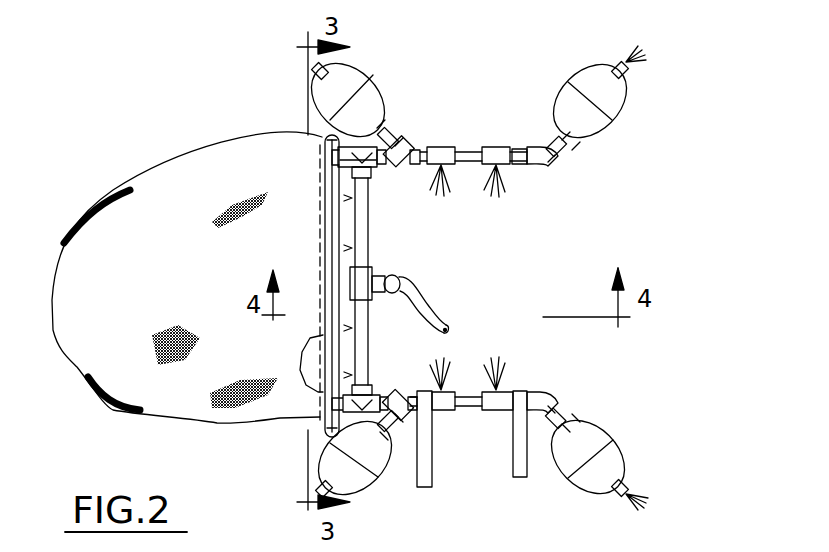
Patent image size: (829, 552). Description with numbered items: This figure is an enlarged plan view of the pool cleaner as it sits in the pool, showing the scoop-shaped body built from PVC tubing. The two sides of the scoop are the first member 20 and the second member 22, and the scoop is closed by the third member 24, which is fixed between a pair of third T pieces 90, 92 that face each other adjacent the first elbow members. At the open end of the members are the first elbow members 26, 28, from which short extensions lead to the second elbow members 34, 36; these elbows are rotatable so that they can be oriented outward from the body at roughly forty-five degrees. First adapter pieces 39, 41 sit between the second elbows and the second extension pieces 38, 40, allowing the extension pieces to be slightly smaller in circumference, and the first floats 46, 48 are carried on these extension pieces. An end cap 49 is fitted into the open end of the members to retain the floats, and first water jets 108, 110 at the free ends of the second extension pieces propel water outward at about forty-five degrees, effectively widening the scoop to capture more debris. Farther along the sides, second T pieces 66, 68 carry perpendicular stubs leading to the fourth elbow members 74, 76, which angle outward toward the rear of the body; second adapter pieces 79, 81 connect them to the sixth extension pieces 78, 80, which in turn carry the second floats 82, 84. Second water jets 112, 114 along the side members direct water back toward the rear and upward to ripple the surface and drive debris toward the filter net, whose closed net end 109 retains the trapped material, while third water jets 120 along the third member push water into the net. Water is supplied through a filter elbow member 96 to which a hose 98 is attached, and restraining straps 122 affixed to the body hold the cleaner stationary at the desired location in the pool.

The first member 20 is at (467, 147).
The second member 22 is at (473, 411).
The third member 24 is at (369, 232).
The first elbow member 26 is at (548, 165).
The first elbow member 28 is at (541, 393).
The second elbow member 34 is at (532, 148).
The second elbow member 36 is at (528, 392).
The second extension piece 38 is at (598, 128).
The first adapter piece 39 is at (562, 152).
The second extension piece 40 is at (568, 410).
The first adapter piece 41 is at (560, 410).
The first float 46 is at (616, 106).
The first float 48 is at (613, 440).
The end cap 49 is at (620, 63).
The second T piece 66 is at (398, 170).
The second T piece 68 is at (428, 422).
The fourth elbow member 74 is at (410, 147).
The fourth elbow member 76 is at (398, 396).
The sixth extension piece 78 is at (328, 138).
The second adapter piece 79 is at (394, 133).
The sixth extension piece 80 is at (370, 470).
The second adapter piece 81 is at (387, 402).
The second float 82 is at (385, 66).
The second float 84 is at (323, 458).
The third T piece 90 is at (340, 158).
The third T piece 92 is at (325, 405).
The filter elbow member 96 is at (398, 283).
The hose 98 is at (427, 304).
The first water jet 108 is at (640, 58).
The closed net end 109 is at (102, 196).
The first water jet 110 is at (630, 486).
The second water jet 112 is at (498, 167).
The second water jet 114 is at (497, 385).
The third water jet 120 is at (350, 200).
The restraining strap 122 is at (433, 468).